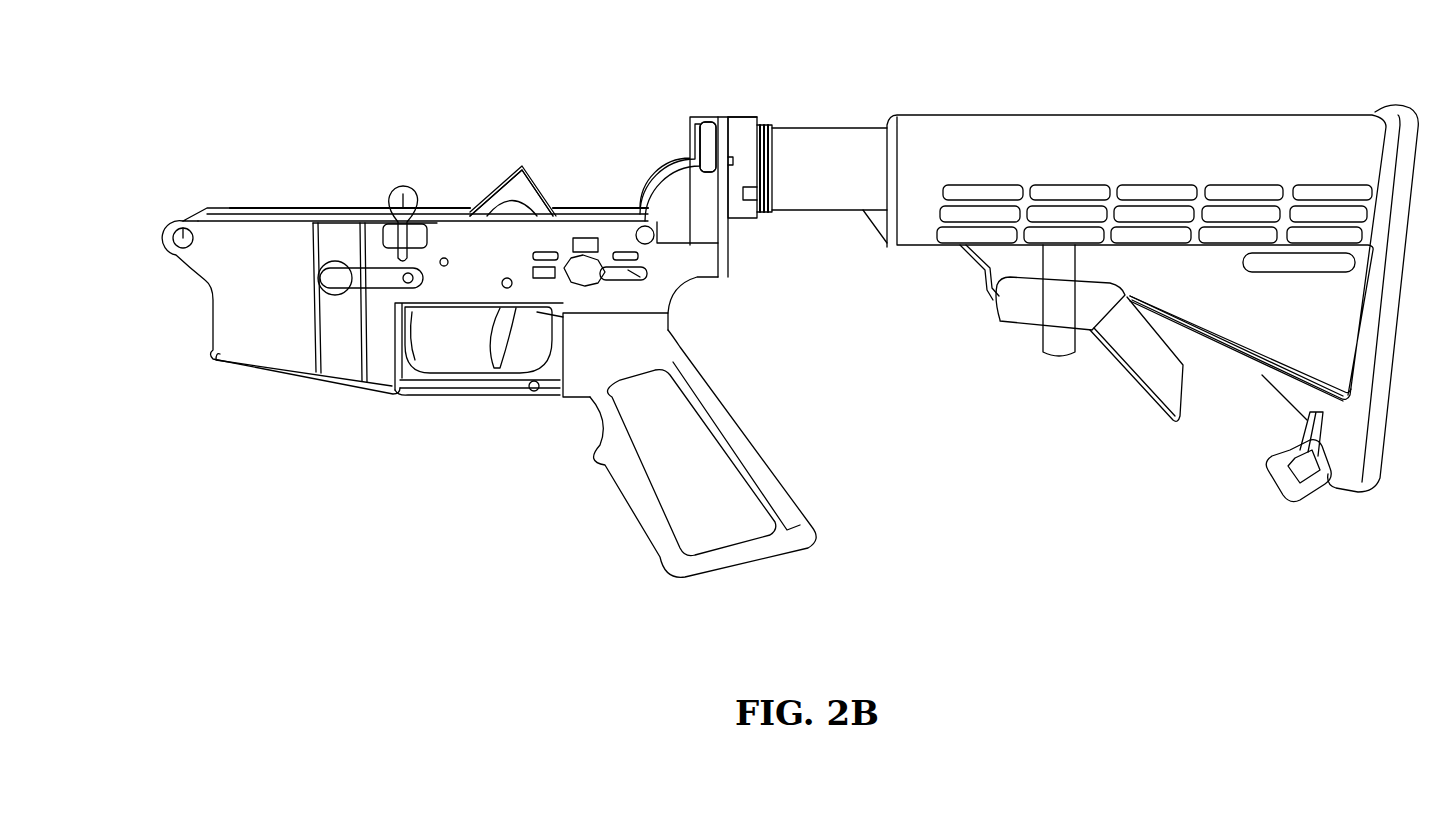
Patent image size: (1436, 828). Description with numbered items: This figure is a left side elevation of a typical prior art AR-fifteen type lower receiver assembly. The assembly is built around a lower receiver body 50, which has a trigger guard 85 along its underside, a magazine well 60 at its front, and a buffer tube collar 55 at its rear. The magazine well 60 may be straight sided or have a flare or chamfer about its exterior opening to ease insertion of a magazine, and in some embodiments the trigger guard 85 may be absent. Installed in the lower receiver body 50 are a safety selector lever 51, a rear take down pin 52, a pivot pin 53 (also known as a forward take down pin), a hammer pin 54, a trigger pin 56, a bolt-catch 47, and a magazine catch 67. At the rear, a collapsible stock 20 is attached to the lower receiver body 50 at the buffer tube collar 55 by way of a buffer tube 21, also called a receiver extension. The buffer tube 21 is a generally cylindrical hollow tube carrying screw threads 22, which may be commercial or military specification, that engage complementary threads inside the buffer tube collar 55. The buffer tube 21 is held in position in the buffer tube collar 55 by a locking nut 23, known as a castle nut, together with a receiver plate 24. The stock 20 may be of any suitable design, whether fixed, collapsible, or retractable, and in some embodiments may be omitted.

The collapsible stock 20 is at (1272, 332).
The buffer tube 21 is at (830, 135).
The screw threads 22 is at (766, 128).
The locking nut 23 is at (740, 130).
The receiver plate 24 is at (720, 125).
The bolt-catch 47 is at (403, 210).
The lower receiver body 50 is at (573, 152).
The safety selector lever 51 is at (672, 284).
The rear take down pin 52 is at (645, 226).
The pivot pin 53 is at (183, 226).
The hammer pin 54 is at (443, 258).
The buffer tube collar 55 is at (703, 125).
The trigger pin 56 is at (506, 290).
The magazine well 60 is at (256, 349).
The magazine catch 67 is at (372, 277).
The trigger guard 85 is at (472, 394).